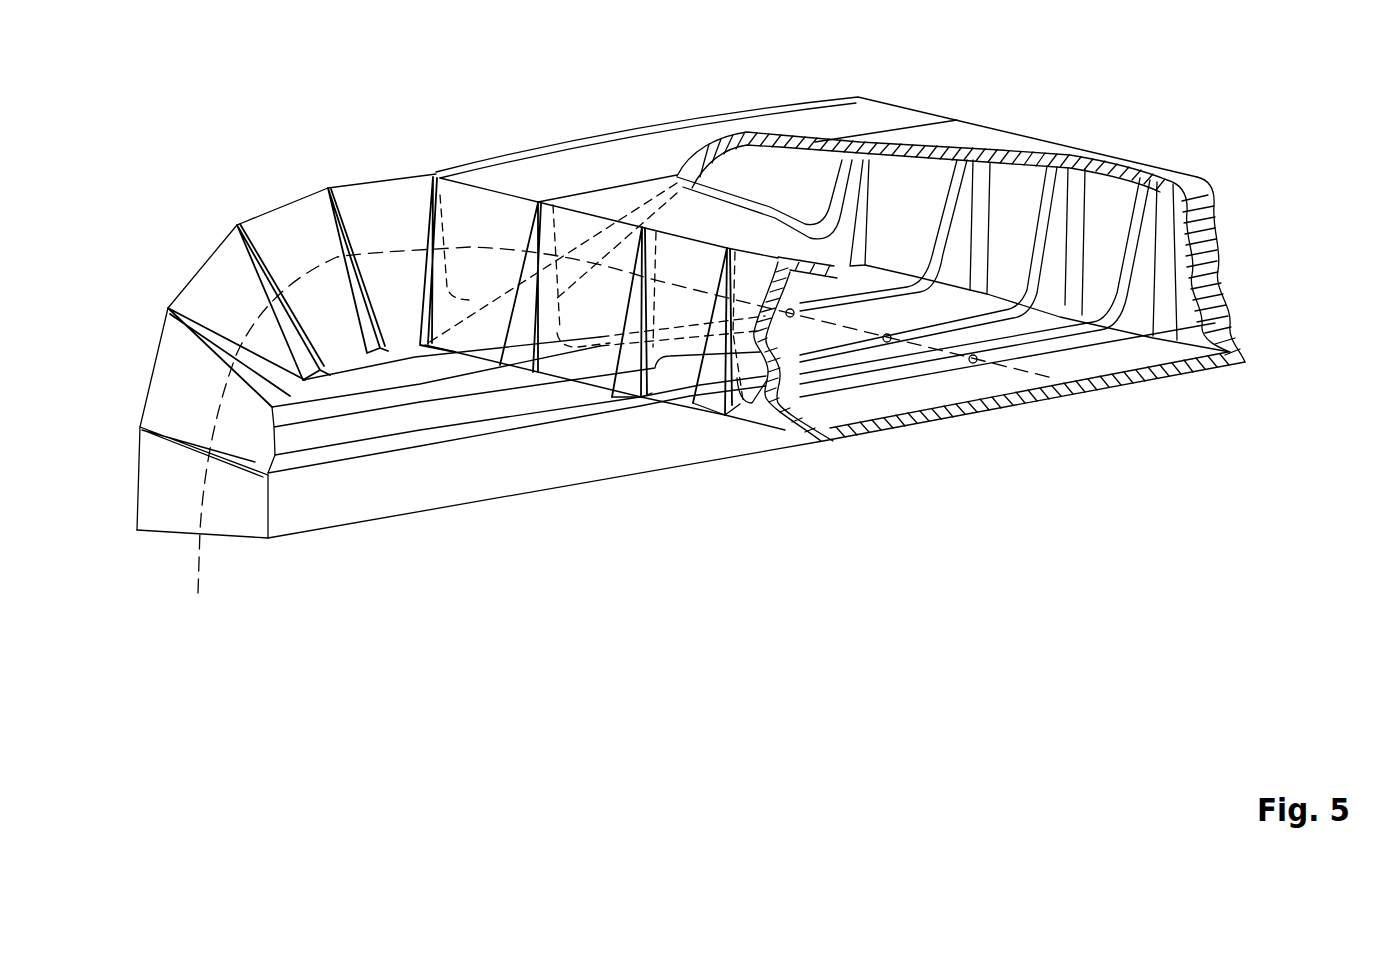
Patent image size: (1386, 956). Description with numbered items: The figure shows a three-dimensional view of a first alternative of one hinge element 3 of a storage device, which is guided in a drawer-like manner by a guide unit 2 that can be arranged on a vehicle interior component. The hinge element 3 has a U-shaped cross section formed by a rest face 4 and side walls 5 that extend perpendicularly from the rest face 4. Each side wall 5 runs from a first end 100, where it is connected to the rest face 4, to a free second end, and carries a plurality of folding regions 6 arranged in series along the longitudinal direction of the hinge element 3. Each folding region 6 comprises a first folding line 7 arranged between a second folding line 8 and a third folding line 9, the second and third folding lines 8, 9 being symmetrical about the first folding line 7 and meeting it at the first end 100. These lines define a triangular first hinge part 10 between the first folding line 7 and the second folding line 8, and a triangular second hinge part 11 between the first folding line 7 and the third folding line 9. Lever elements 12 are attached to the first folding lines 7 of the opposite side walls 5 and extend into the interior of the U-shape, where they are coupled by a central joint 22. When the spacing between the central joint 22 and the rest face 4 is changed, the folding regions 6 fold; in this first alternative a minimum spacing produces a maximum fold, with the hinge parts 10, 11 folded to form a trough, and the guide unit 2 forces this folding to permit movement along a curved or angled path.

The guide unit 2 is at (198, 584).
The hinge element 3 is at (240, 150).
The rest face 4 is at (620, 163).
The side wall 5 is at (1113, 207).
The folding region 6 is at (330, 217).
The first folding line 7 is at (727, 380).
The second folding line 8 is at (657, 300).
The third folding line 9 is at (810, 383).
The first hinge part 10 is at (640, 363).
The second hinge part 11 is at (752, 382).
The lever element 12 is at (820, 218).
The central joint 22 is at (677, 173).
The first end 100 is at (583, 220).